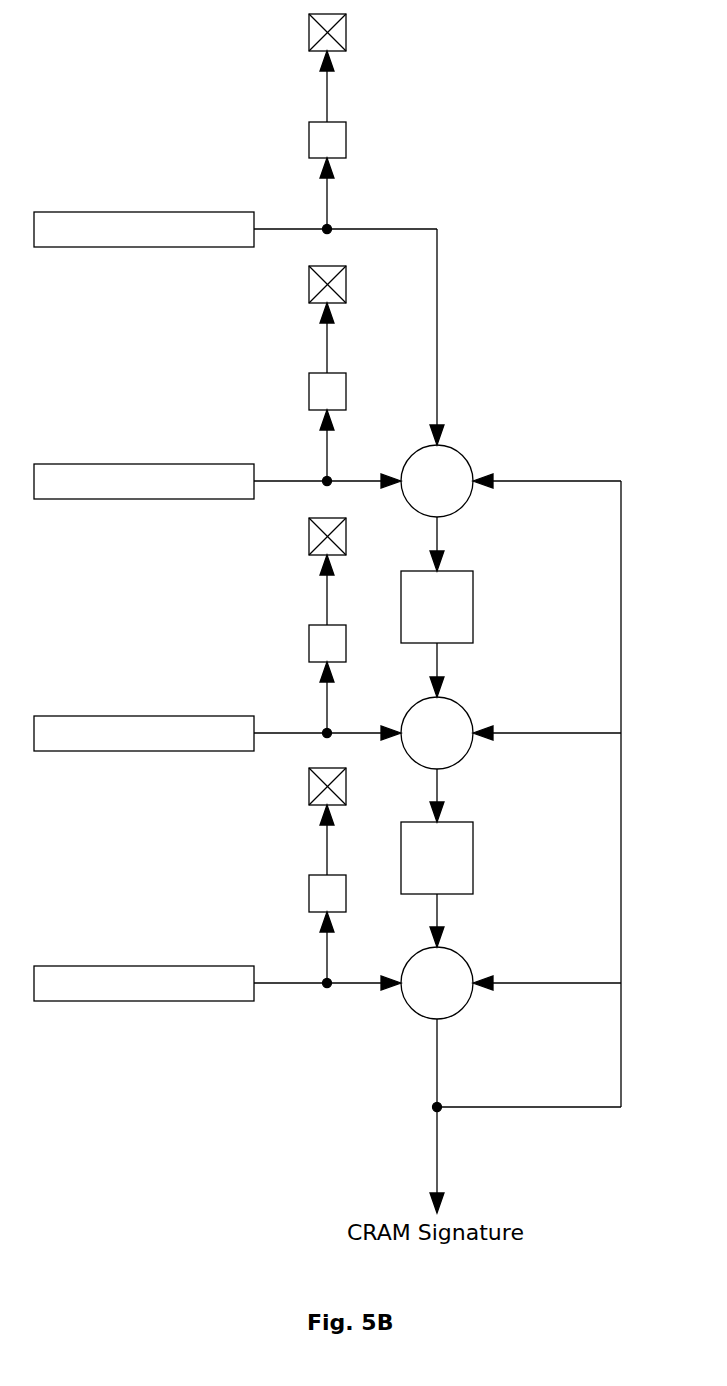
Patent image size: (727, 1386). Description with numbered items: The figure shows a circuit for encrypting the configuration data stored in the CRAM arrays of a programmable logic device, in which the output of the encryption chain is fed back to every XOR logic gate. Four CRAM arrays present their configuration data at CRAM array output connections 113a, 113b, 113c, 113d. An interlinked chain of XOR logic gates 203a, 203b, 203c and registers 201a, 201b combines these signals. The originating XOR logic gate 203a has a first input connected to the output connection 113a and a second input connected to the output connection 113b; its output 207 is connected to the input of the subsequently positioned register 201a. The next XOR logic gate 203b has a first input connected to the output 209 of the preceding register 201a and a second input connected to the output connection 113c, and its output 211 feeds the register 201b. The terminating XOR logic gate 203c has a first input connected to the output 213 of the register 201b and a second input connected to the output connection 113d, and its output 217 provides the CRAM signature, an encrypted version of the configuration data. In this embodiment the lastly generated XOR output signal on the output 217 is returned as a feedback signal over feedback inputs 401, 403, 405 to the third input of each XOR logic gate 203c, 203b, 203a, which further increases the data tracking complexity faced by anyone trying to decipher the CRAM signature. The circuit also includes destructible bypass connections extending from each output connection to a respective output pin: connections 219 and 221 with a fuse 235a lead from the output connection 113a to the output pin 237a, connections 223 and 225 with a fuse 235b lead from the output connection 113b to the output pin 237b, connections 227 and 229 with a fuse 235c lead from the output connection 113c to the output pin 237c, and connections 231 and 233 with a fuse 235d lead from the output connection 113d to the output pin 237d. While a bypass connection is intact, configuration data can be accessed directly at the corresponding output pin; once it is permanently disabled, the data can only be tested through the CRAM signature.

The CRAM array output connection 113a is at (293, 231).
The CRAM array output connection 113b is at (293, 483).
The CRAM array output connection 113c is at (293, 735).
The CRAM array output connection 113d is at (293, 985).
The connection 219 is at (327, 203).
The connection 221 is at (327, 96).
The connection 223 is at (327, 455).
The connection 225 is at (327, 348).
The connection 227 is at (327, 707).
The connection 229 is at (327, 600).
The connection 231 is at (327, 957).
The connection 233 is at (327, 850).
The fuse 235a is at (346, 137).
The fuse 235b is at (346, 393).
The fuse 235c is at (346, 645).
The fuse 235d is at (346, 895).
The output pin 237a is at (346, 29).
The output pin 237b is at (346, 281).
The output pin 237c is at (346, 533).
The output pin 237d is at (346, 783).
The originating XOR logic gate 203a is at (462, 455).
The XOR logic gate 203b is at (462, 707).
The terminating XOR logic gate 203c is at (462, 957).
The register 201a is at (477, 603).
The register 201b is at (477, 854).
The output of originating XOR logic gate 207 is at (437, 534).
The output of register 209 is at (437, 658).
The output of XOR logic gate 211 is at (437, 786).
The output of register 213 is at (437, 912).
The output of terminating XOR logic gate 217 is at (437, 1053).
The feedback input 401 is at (528, 982).
The feedback input 403 is at (528, 732).
The feedback input 405 is at (528, 480).